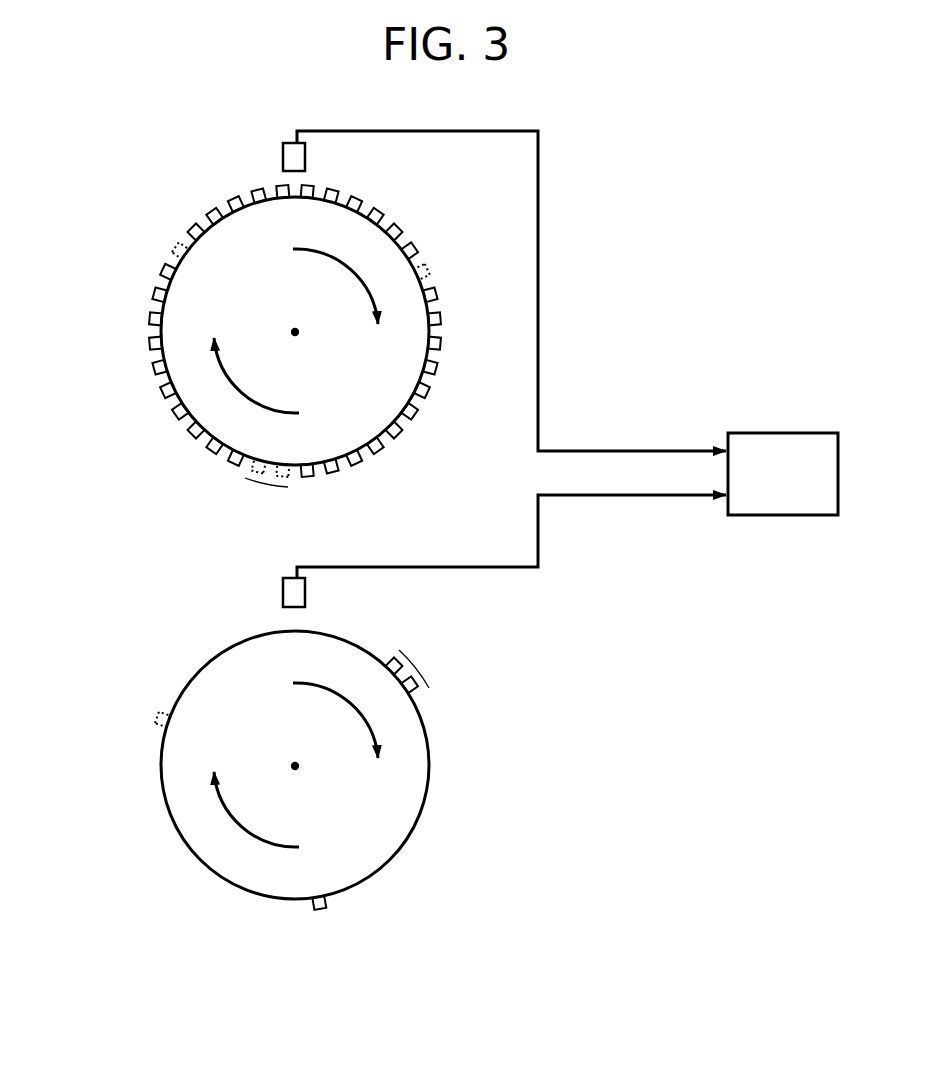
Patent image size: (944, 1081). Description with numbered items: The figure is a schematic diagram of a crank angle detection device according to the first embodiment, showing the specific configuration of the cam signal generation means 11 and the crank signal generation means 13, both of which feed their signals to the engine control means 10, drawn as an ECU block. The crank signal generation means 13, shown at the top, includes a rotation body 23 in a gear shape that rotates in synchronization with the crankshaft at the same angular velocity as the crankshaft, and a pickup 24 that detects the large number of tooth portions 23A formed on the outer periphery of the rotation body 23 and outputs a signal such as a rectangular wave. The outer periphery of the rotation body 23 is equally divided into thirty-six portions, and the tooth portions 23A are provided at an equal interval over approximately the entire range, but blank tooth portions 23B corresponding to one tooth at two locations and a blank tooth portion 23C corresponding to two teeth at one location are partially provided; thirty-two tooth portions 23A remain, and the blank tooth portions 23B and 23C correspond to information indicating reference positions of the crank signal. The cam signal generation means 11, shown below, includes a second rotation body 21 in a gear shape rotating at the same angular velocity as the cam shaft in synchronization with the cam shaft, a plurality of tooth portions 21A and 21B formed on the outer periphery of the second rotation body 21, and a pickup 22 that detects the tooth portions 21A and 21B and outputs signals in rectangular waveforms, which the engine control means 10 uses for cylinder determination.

The engine control means 10 is at (765, 432).
The cam signal generation means 11 is at (204, 615).
The crank signal generation means 13 is at (203, 172).
The second rotation body 21 is at (393, 812).
The tooth portions 21A is at (158, 716).
The tooth portions 21B is at (430, 667).
The pickup 22 is at (294, 600).
The rotation body 23 is at (363, 246).
The tooth portions 23A is at (153, 288).
The blank tooth portions 23B is at (168, 238).
The blank tooth portion 23C is at (262, 490).
The pickup 24 is at (294, 163).